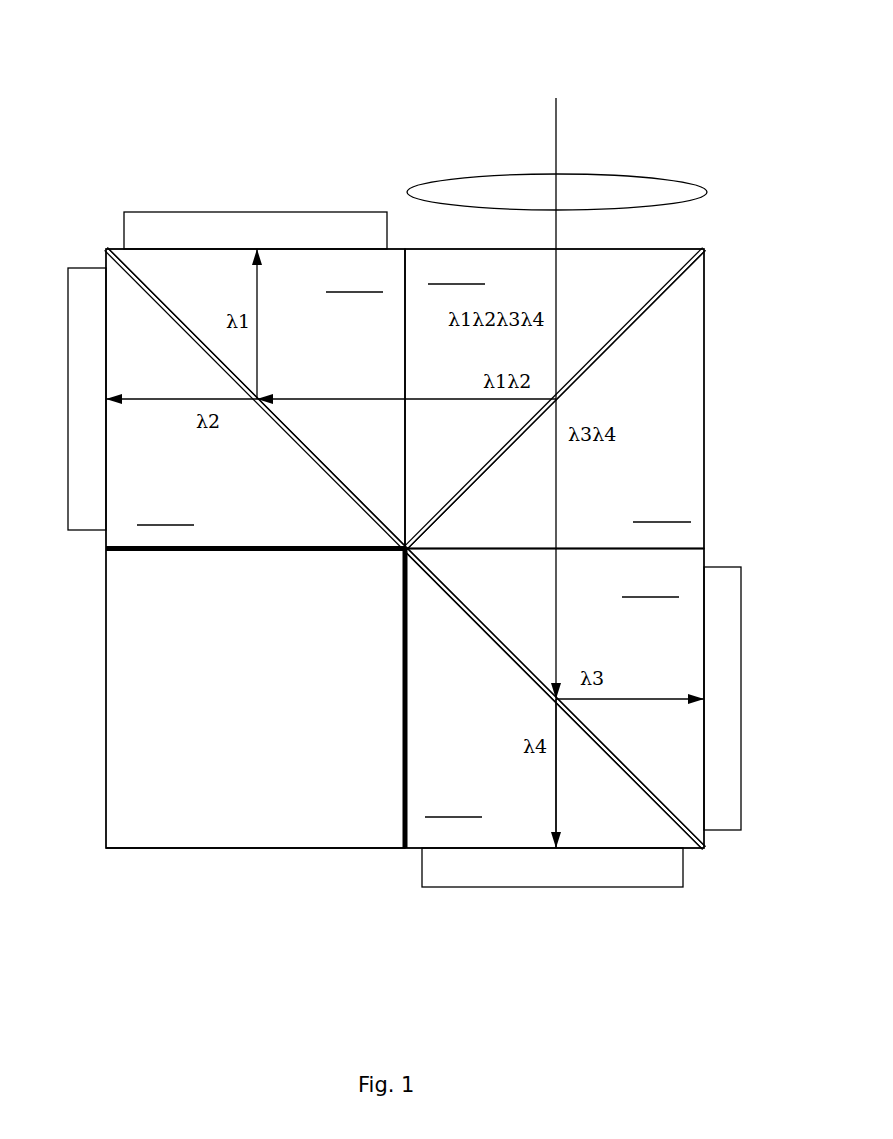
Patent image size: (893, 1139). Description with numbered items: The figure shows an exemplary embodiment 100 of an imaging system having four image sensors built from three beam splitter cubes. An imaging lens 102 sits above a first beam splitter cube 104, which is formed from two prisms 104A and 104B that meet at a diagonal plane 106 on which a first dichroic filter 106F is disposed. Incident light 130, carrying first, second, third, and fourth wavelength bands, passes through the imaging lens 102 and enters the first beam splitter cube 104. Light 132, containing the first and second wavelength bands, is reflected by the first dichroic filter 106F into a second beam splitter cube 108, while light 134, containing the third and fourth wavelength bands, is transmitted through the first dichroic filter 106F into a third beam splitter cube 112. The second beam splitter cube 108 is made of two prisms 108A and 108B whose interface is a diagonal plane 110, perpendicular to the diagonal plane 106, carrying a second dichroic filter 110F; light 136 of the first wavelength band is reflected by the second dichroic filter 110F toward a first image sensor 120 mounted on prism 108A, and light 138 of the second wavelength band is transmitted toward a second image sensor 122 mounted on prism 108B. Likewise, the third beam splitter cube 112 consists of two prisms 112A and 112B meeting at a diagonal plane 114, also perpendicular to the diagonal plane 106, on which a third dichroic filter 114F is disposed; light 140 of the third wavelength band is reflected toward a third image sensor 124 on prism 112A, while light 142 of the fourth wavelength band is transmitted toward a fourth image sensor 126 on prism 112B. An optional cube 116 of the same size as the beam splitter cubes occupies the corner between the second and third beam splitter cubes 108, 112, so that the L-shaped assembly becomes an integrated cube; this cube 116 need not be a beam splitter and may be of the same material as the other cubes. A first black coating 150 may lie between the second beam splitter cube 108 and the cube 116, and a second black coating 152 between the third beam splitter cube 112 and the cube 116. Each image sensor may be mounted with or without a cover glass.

The imaging system embodiment 100 is at (163, 70).
The imaging lens 102 is at (640, 176).
The first beam splitter cube 104 is at (704, 472).
The prism of first beam splitter cube 104A is at (456, 273).
The prism of first beam splitter cube 104B is at (662, 511).
The diagonal plane of first beam splitter cube 106 is at (490, 475).
The first dichroic filter 106F is at (640, 315).
The second beam splitter cube 108 is at (103, 543).
The prism of second beam splitter cube 108A is at (354, 281).
The prism of second beam splitter cube 108B is at (165, 514).
The diagonal plane of second beam splitter cube 110 is at (325, 480).
The second dichroic filter 110F is at (168, 310).
The third beam splitter cube 112 is at (704, 560).
The prism of third beam splitter cube 112A is at (650, 586).
The prism of third beam splitter cube 112B is at (453, 806).
The diagonal plane of third beam splitter cube 114 is at (508, 667).
The third dichroic filter 114F is at (668, 755).
The cube 116 is at (280, 849).
The first image sensor 120 is at (200, 212).
The second image sensor 122 is at (67, 478).
The third image sensor 124 is at (741, 622).
The fourth image sensor 126 is at (647, 887).
The incident light 130 is at (556, 133).
The light having first and second wavelength bands 132 is at (468, 378).
The light having third and fourth wavelength bands 134 is at (556, 530).
The light having first wavelength band 136 is at (257, 362).
The light having second wavelength band 138 is at (145, 399).
The light having third wavelength band 140 is at (640, 698).
The light having fourth wavelength band 142 is at (554, 815).
The first black coating 150 is at (308, 553).
The second black coating 152 is at (405, 647).